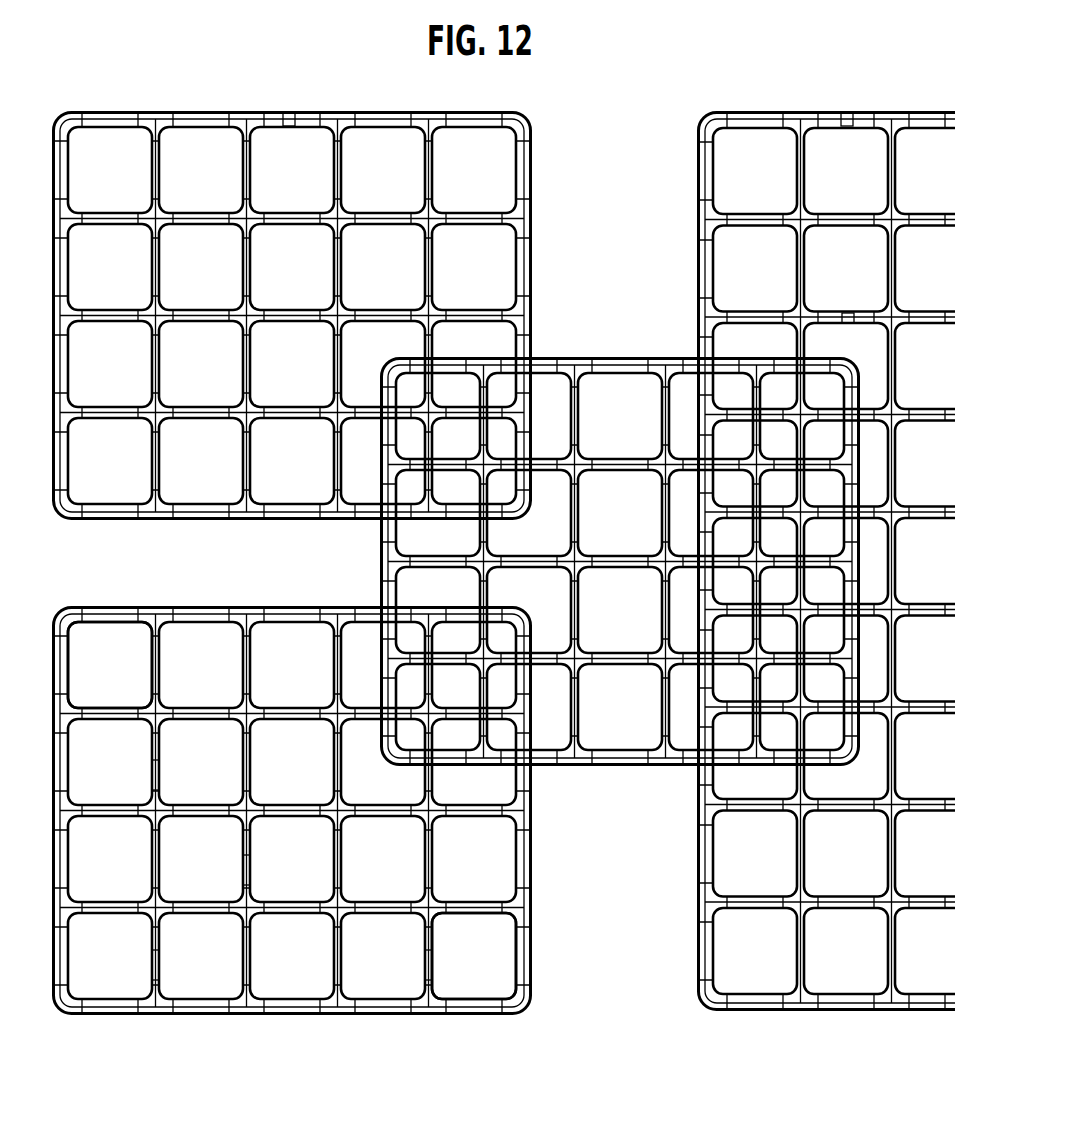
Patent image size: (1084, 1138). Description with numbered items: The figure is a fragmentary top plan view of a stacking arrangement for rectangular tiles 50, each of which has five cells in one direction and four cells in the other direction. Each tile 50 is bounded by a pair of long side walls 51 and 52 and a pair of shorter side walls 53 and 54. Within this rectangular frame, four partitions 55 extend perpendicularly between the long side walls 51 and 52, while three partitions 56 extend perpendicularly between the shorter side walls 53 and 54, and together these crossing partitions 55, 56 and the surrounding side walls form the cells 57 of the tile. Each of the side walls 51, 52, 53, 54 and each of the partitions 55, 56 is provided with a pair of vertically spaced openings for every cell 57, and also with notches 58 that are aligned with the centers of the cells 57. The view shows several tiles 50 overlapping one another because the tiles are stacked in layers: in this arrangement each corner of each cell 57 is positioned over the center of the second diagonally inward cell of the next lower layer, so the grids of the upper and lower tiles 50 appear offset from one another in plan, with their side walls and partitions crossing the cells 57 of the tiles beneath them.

The rectangular tile 50 is at (535, 138).
The long side wall 51 is at (205, 1013).
The long side wall 52 is at (252, 608).
The shorter side wall 53 is at (72, 870).
The shorter side wall 54 is at (540, 847).
The partition 55 is at (158, 964).
The partition 56 is at (162, 783).
The cell 57 is at (120, 636).
The notch 58 is at (290, 113).